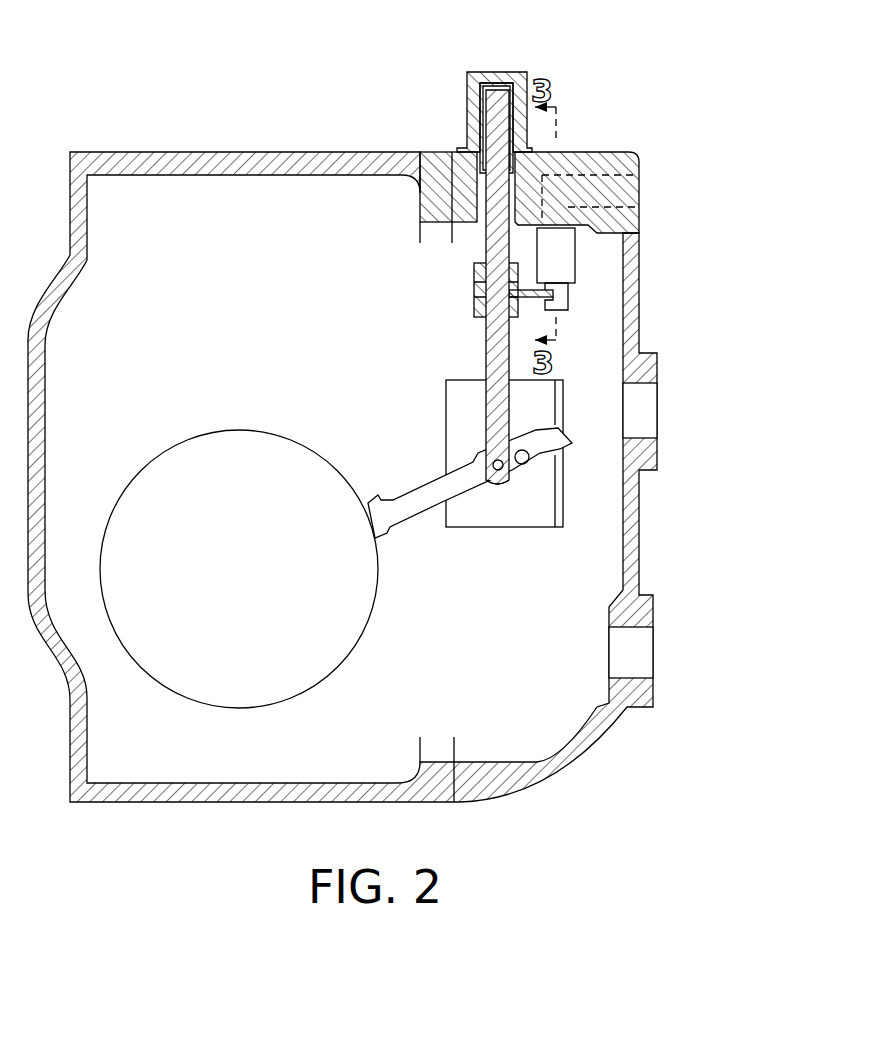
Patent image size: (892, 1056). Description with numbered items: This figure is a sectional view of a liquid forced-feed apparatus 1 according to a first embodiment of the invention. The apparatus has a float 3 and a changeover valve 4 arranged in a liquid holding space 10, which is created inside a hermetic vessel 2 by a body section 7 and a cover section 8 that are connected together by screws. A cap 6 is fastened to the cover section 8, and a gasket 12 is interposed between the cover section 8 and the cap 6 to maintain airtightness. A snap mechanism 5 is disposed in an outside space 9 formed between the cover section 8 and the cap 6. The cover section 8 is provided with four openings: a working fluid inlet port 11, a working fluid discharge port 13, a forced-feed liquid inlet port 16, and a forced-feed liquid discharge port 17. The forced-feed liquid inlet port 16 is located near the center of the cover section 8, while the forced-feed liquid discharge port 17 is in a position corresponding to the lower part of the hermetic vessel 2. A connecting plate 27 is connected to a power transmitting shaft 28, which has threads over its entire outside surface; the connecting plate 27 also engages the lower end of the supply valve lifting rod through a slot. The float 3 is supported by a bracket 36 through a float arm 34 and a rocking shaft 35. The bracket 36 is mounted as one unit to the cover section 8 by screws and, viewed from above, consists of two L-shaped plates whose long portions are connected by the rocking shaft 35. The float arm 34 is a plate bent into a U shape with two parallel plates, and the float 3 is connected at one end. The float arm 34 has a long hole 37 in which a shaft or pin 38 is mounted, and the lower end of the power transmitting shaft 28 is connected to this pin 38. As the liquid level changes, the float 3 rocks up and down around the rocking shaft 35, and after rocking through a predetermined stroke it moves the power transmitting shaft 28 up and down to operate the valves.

The float type steam trap 1 is at (412, 401).
The hermetic vessel 2 is at (412, 410).
The float 3 is at (348, 655).
The changeover valve 4 is at (590, 262).
The snap mechanism 5 is at (468, 249).
The cap 6 is at (483, 75).
The body section 7 is at (100, 157).
The cover section 8 is at (615, 155).
The outside space 9 is at (477, 92).
The liquid holding space 10 is at (139, 264).
The working fluid inlet port 11 is at (669, 196).
The gasket 12 is at (458, 152).
The working fluid discharge port 13 is at (632, 190).
The forced-feed liquid inlet port 16 is at (643, 415).
The forced-feed liquid discharge port 17 is at (638, 657).
The connecting plate 27 is at (568, 292).
The power transmitting shaft 28 is at (487, 345).
The float arm 34 is at (395, 488).
The rocking shaft 35 is at (522, 465).
The bracket 36 is at (455, 530).
The long hole 37 is at (497, 490).
The shaft (or pin) 38 is at (493, 460).